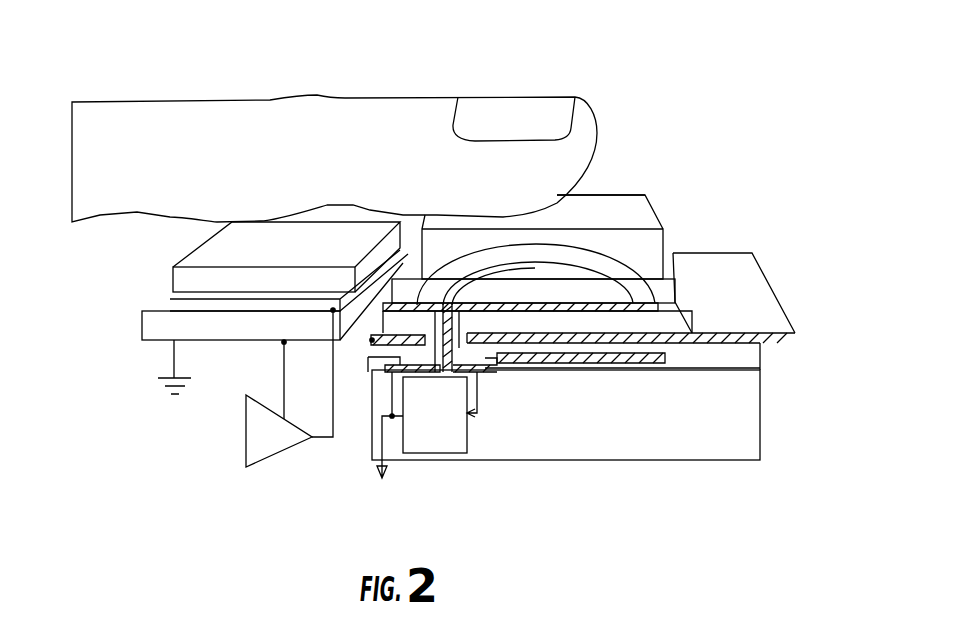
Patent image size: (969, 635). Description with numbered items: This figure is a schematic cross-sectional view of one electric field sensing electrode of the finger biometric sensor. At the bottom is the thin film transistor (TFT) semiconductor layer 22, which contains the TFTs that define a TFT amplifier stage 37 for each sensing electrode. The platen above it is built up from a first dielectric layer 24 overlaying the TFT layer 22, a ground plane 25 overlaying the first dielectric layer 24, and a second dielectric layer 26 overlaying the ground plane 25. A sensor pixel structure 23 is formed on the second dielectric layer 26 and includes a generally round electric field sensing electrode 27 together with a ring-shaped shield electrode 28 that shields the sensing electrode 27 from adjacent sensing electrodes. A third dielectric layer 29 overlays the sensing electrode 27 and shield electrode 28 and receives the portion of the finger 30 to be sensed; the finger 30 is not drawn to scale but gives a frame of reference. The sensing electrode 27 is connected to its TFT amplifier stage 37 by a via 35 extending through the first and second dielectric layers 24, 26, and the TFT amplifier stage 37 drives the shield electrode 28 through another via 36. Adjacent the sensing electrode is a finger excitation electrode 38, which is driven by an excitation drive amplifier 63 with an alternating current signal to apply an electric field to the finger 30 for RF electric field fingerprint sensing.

The thin film transistor (TFT) semiconductor layer 22 is at (758, 412).
The sensor pixel structure 23 is at (752, 72).
The first dielectric layer 24 is at (752, 358).
The ground plane 25 is at (723, 280).
The second dielectric layer 26 is at (142, 322).
The electric field sensing electrode 27 is at (530, 285).
The ring-shaped shield electrode 28 is at (620, 265).
The third dielectric layer 29 is at (173, 272).
The finger 30 is at (418, 96).
The via 35 is at (460, 347).
The via 36 is at (372, 342).
The TFT amplifier stage 37 is at (432, 453).
The finger excitation electrode 38 is at (170, 306).
The excitation drive amplifier 63 is at (246, 448).